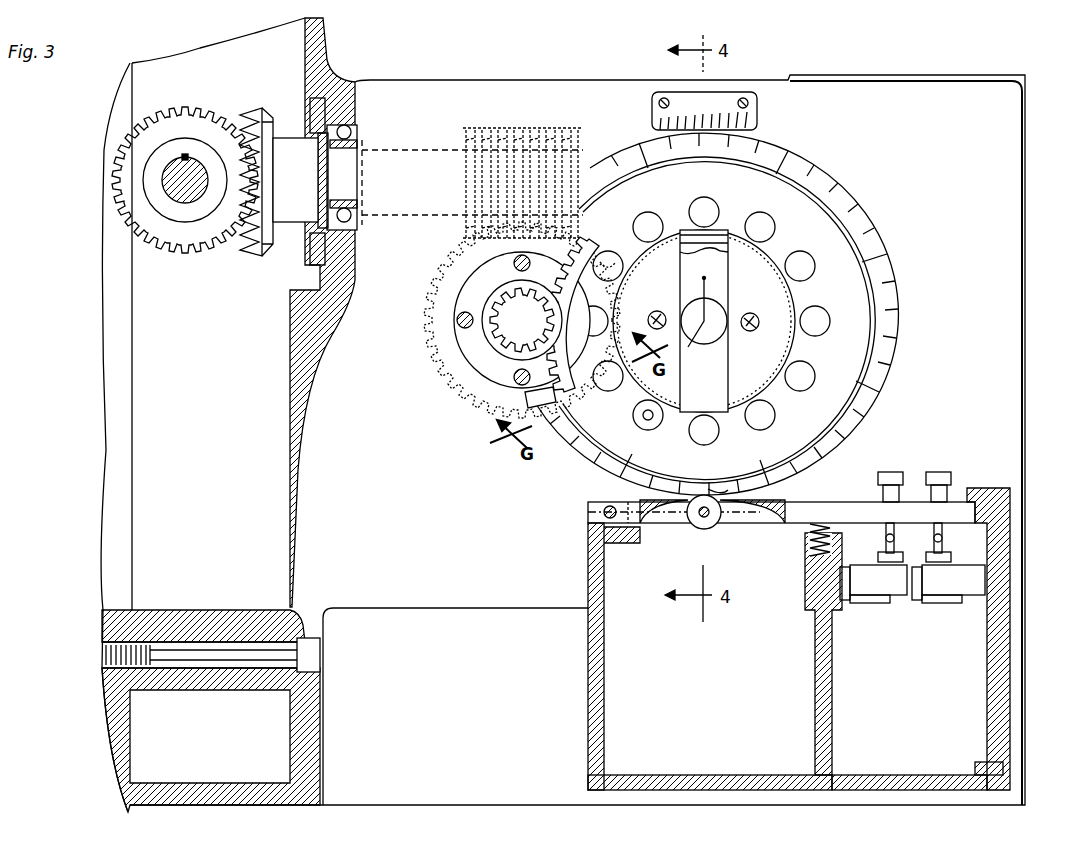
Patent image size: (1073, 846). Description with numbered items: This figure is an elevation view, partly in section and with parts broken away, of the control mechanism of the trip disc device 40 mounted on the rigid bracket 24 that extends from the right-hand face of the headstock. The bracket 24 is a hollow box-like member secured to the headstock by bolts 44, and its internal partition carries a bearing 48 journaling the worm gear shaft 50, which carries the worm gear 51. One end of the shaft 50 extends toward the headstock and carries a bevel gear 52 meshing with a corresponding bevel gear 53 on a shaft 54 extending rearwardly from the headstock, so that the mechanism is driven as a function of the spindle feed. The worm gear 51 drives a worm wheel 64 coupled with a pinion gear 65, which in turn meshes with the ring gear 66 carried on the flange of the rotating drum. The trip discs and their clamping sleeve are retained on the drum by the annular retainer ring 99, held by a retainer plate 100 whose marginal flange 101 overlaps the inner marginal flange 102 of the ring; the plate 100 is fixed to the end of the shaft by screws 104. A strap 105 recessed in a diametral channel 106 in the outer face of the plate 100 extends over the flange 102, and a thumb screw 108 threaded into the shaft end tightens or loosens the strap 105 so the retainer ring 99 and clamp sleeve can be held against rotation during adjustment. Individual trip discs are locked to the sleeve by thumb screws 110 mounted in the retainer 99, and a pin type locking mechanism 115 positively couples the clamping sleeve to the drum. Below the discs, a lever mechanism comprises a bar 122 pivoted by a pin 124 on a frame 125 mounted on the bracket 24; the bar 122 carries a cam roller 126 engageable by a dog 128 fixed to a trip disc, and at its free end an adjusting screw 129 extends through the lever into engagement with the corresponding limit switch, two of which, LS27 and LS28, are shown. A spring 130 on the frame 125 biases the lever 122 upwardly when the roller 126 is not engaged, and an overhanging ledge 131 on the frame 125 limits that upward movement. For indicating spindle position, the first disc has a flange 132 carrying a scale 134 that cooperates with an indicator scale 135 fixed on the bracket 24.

The bracket 24 is at (1010, 218).
The trip disc device 40 is at (862, 190).
The bolts 44 is at (320, 657).
The bearing 48 is at (352, 140).
The worm gear shaft 50 is at (392, 150).
The worm gear 51 is at (513, 128).
The bevel gear 52 is at (240, 115).
The bevel gear 53 is at (165, 117).
The shaft 54 is at (185, 157).
The worm wheel 64 is at (424, 322).
The pinion gear 65 is at (510, 302).
The ring gear 66 is at (575, 247).
The retainer ring 99 is at (860, 244).
The retainer plate 100 is at (783, 300).
The marginal flange 101 is at (780, 351).
The inner marginal flange 102 is at (722, 230).
The screws 104 is at (655, 312).
The strap 105 is at (683, 280).
The diametral channel 106 is at (722, 246).
The thumb screw 108 is at (706, 340).
The thumb screw 110 is at (690, 207).
The pin type locking mechanism 115 is at (633, 416).
The bar 122 is at (848, 503).
The pin 124 is at (602, 512).
The frame 125 is at (592, 548).
The cam roller 126 is at (705, 529).
The dog 128 is at (733, 487).
The adjusting screw 129 is at (893, 478).
The spring 130 is at (808, 538).
The overhanging ledge 131 is at (975, 490).
The flange 132 is at (827, 180).
The scale 134 is at (779, 148).
The indicator scale 135 is at (752, 115).
The limit switch LS27 is at (880, 598).
The limit switch LS28 is at (935, 598).